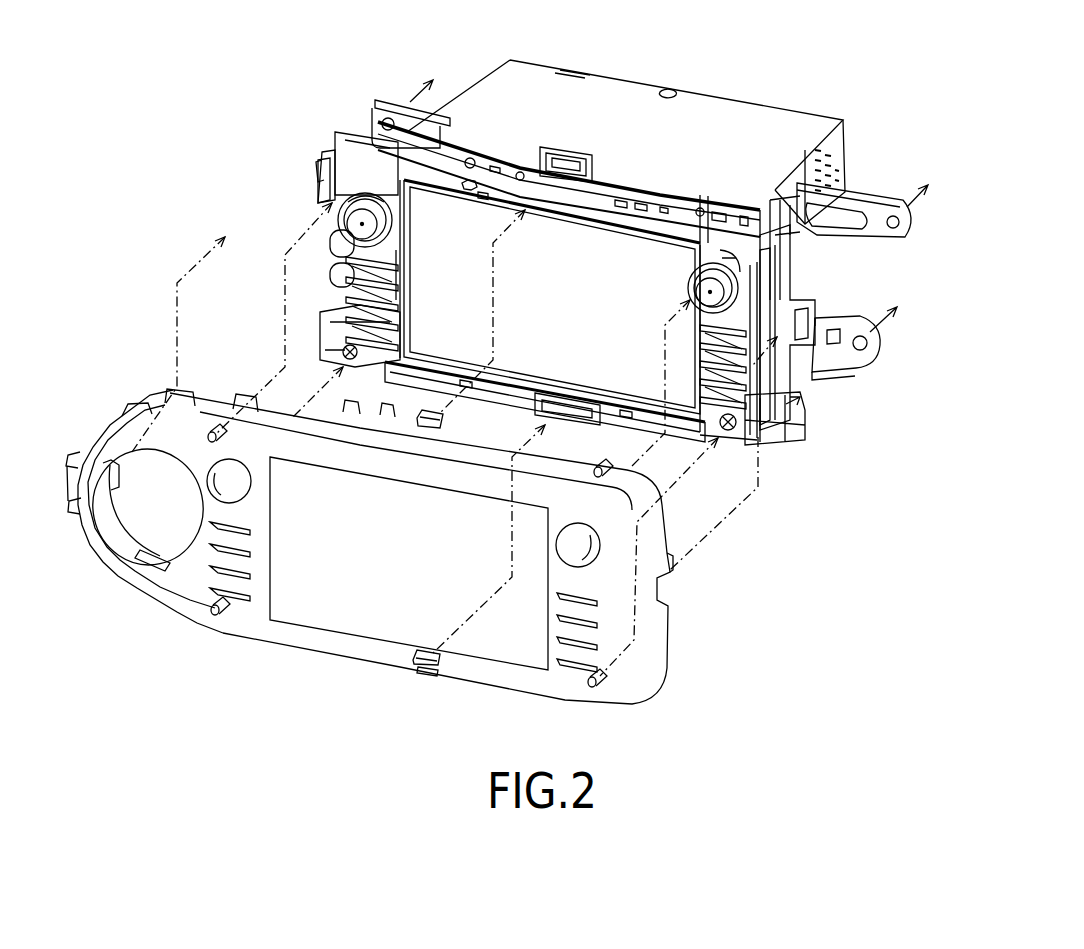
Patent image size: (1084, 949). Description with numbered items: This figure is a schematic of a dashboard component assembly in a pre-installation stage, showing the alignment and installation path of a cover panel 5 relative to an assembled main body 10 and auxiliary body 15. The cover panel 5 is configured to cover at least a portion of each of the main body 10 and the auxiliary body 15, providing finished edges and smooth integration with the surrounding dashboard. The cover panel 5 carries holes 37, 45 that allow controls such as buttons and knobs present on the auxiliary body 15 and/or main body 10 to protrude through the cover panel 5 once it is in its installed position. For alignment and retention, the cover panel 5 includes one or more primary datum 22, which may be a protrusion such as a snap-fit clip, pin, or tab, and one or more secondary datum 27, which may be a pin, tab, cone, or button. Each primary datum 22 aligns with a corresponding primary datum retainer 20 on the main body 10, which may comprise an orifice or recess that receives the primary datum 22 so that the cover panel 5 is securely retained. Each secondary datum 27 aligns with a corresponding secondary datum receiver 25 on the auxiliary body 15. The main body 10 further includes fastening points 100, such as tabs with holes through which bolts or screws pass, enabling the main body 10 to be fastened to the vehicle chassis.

The cover panel 5 is at (669, 695).
The main body 10 is at (768, 72).
The auxiliary body 15 is at (333, 250).
The primary datum retainer 20 is at (566, 148).
The primary datum 22 is at (413, 430).
The secondary datum receiver 25 is at (347, 357).
The secondary datum 27 is at (207, 431).
The hole 37 is at (215, 552).
The hole 45 is at (230, 485).
The fastening point 100 is at (383, 98).